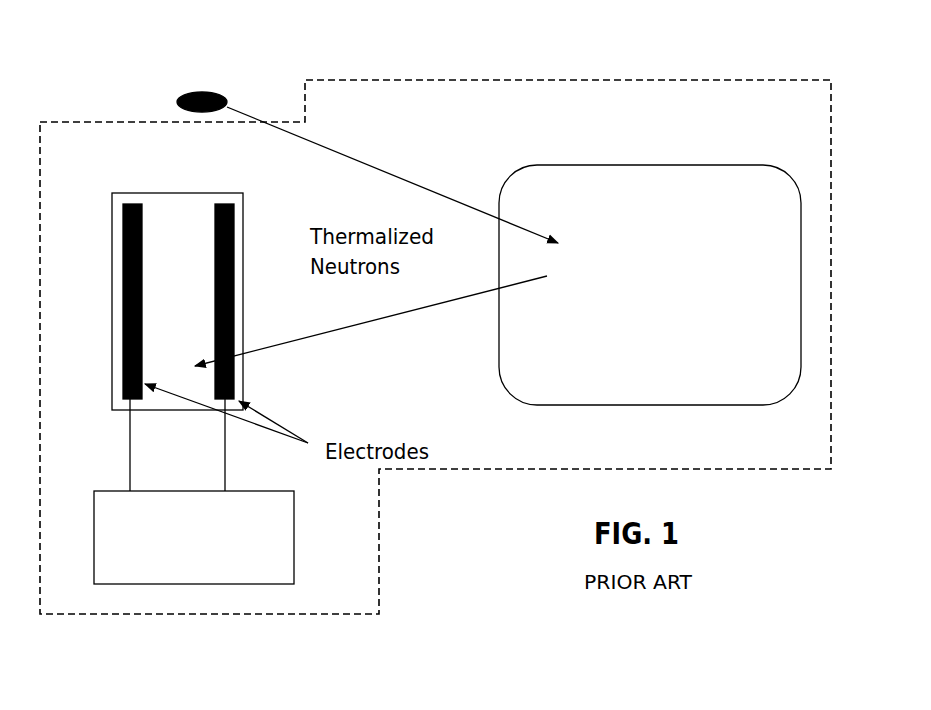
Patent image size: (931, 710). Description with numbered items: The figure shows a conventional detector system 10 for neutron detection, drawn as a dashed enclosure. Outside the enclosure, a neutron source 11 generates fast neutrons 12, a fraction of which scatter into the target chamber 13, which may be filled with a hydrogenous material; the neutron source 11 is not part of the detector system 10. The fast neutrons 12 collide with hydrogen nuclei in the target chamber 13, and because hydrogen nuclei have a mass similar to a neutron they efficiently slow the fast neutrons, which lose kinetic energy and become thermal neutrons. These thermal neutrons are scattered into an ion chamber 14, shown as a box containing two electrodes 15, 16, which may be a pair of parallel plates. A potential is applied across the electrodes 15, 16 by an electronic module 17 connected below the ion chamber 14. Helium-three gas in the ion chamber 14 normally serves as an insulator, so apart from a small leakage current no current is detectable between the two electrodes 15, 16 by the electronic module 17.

The detector system 10 is at (557, 78).
The neutron source 11 is at (225, 100).
The fast neutrons 12 is at (387, 173).
The target chamber 13 is at (650, 285).
The ion chamber 14 is at (162, 280).
The electrode 15 is at (121, 297).
The electrode 16 is at (232, 218).
The electronic module 17 is at (194, 537).